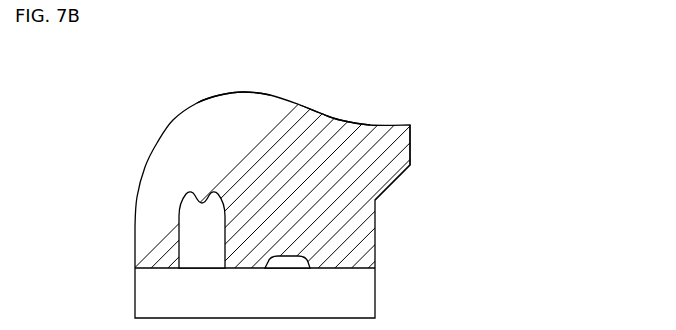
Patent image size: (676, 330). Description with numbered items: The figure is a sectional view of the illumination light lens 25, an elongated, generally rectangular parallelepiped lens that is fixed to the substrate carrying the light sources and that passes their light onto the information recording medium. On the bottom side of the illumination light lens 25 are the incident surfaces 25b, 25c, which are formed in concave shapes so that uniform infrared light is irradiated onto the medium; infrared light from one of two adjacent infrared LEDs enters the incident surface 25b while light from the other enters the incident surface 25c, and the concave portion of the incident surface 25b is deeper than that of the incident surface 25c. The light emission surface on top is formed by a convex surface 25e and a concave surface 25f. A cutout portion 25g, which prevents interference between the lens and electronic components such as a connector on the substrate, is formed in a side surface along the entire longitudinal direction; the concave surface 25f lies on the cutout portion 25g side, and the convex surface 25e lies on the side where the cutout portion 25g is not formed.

The illumination light lens 25 is at (499, 46).
The incident surface 25b is at (187, 198).
The incident surface 25c is at (288, 257).
The convex surface 25e is at (231, 90).
The concave surface 25f is at (342, 121).
The cutout portion 25g is at (433, 224).